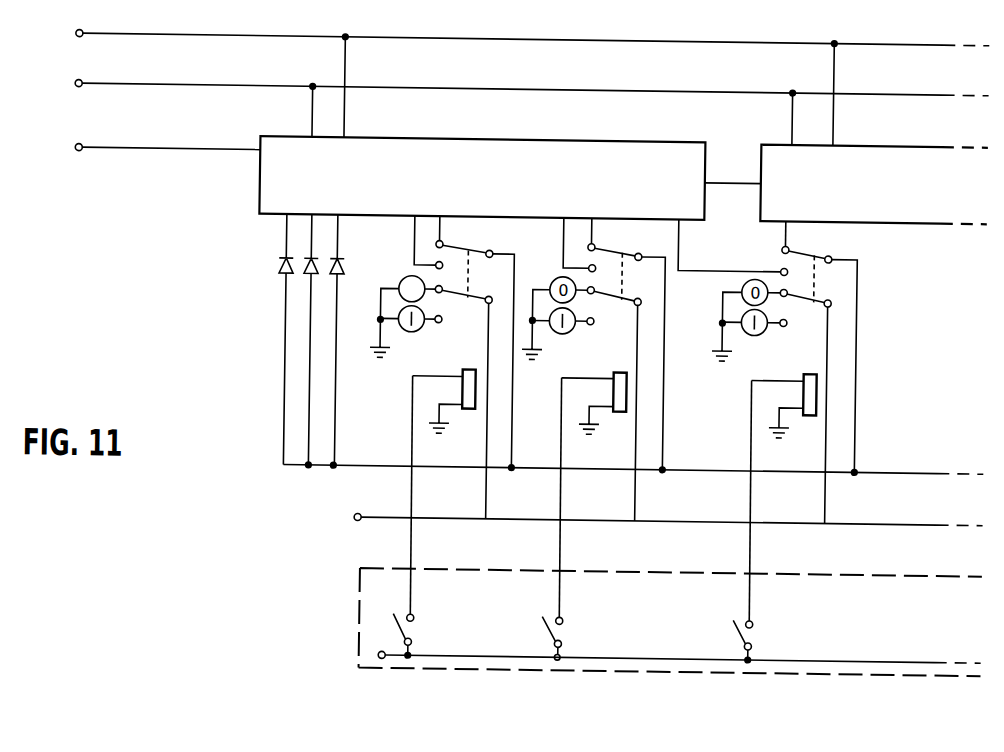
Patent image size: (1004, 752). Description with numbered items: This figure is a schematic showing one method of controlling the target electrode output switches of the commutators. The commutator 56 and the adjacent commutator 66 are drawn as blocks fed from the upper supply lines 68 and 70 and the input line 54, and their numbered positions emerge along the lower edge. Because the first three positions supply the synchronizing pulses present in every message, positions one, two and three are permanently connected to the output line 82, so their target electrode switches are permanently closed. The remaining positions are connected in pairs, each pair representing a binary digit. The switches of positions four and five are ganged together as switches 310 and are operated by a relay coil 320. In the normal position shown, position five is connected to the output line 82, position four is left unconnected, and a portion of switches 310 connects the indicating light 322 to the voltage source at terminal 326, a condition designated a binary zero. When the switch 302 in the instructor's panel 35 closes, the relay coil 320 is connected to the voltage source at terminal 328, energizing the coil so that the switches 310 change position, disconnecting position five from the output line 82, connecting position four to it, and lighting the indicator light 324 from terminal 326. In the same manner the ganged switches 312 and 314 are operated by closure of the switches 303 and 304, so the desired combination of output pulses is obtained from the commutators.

The power supply line 68 is at (108, 39).
The power supply line 70 is at (106, 89).
The input line 54 is at (137, 152).
The commutator 56 is at (258, 185).
The commutator 66 is at (758, 148).
The ganged switches 310 is at (498, 288).
The switches 312 is at (650, 288).
The switches 314 is at (838, 288).
The indicating light 322 is at (403, 282).
The indicator light 324 is at (419, 333).
The relay coil 320 is at (470, 410).
The output line 82 is at (880, 468).
The terminal 326 is at (391, 520).
The instructor's panel 35 is at (362, 608).
The terminal 328 is at (384, 653).
The switch 302 is at (415, 640).
The switch 303 is at (566, 640).
The switch 304 is at (755, 640).